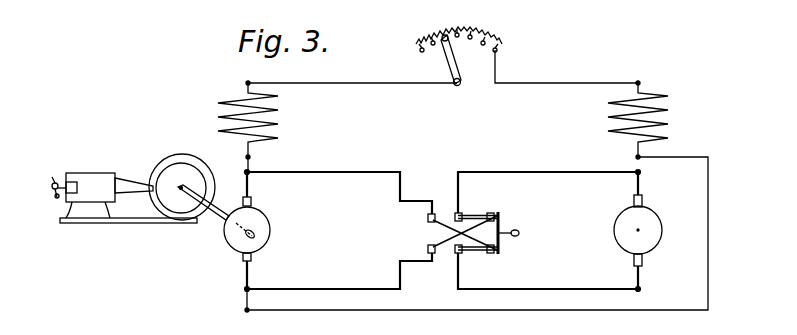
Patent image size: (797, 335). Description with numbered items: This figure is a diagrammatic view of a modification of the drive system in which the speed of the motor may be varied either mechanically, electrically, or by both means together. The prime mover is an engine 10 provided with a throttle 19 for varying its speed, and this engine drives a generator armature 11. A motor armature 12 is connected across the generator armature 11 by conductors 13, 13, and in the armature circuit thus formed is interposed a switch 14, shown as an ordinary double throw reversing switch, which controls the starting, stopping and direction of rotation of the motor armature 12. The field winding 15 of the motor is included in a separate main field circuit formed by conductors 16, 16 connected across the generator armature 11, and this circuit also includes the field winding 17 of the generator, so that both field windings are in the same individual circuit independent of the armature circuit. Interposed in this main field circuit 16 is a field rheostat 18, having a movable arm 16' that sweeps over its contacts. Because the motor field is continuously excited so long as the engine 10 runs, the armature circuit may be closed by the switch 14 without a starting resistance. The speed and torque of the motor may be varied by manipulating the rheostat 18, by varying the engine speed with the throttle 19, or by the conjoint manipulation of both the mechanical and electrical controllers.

The engine 10 is at (127, 210).
The generator armature 11 is at (270, 234).
The motor armature 12 is at (652, 228).
The conductors 13 is at (366, 163).
The switch 14 is at (519, 233).
The field winding of the motor 15 is at (660, 118).
The conductors 16 is at (476, 192).
The switch arm 16' is at (424, 43).
The field winding of the generator 17 is at (270, 121).
The field rheostat 18 is at (480, 32).
The throttle 19 is at (52, 199).